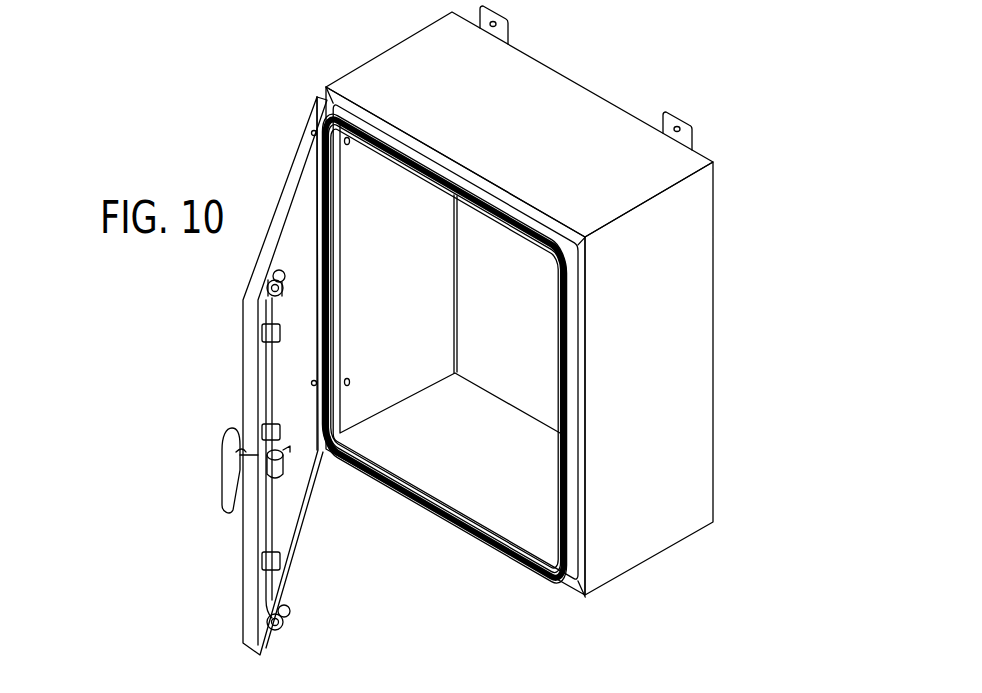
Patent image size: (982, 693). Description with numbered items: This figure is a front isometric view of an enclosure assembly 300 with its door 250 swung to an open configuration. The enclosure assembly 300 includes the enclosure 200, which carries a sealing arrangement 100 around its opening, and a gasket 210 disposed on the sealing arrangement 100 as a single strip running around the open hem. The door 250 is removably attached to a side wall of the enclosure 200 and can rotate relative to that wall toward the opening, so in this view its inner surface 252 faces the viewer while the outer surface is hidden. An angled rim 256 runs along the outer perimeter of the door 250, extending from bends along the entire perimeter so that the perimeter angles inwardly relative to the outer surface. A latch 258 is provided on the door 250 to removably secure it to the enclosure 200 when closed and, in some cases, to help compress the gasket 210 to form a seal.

The enclosure assembly 300 is at (132, 67).
The sealing arrangement 100 is at (390, 90).
The enclosure 200 is at (616, 81).
The gasket 210 is at (566, 405).
The door 250 is at (242, 392).
The inner surface 252 is at (292, 234).
The angled rim 256 is at (307, 113).
The latch 258 is at (223, 452).